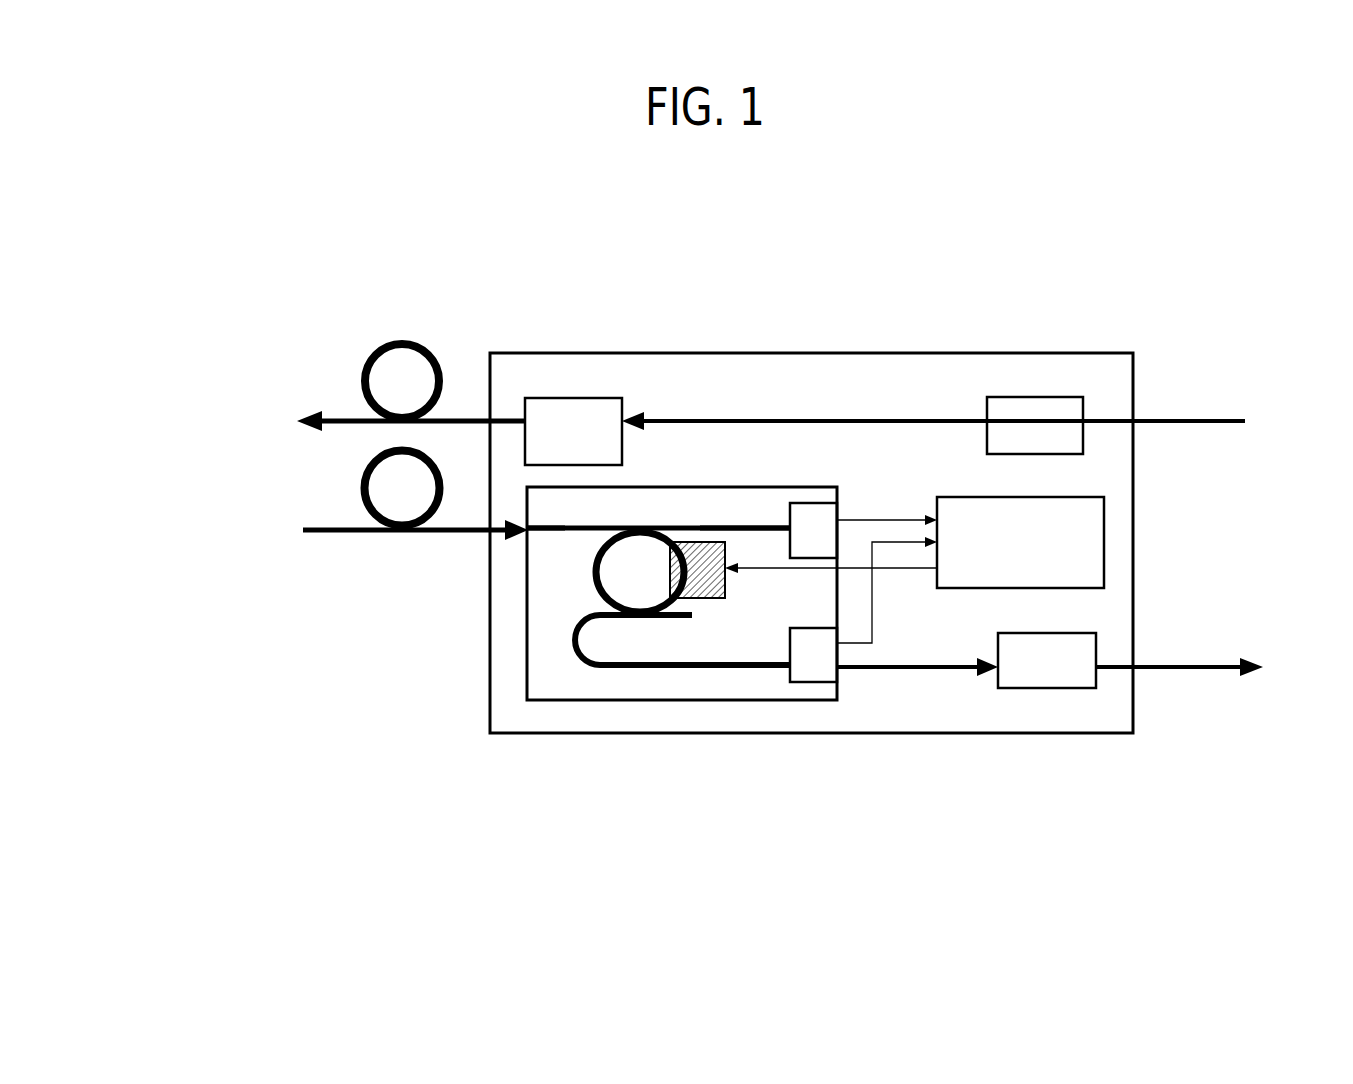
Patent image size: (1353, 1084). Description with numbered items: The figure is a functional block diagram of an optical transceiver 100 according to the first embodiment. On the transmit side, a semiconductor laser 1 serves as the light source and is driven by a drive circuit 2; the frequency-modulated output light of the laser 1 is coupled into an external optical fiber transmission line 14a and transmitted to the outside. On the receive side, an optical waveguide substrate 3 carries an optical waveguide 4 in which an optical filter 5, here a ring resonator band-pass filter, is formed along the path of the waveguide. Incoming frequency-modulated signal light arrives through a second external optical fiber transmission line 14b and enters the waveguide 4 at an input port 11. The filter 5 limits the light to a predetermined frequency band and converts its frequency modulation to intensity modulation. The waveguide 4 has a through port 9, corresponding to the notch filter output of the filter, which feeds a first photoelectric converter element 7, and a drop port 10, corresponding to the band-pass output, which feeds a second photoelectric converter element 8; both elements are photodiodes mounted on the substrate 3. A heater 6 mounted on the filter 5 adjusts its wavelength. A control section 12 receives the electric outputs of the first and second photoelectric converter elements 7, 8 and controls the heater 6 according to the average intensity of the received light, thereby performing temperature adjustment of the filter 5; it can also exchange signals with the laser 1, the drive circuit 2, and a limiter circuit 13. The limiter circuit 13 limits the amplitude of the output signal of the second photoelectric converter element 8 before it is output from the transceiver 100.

The optical transceiver 100 is at (490, 368).
The optical fiber transmission line 14a is at (358, 371).
The optical fiber transmission line 14b is at (357, 475).
The semiconductor laser 1 is at (562, 410).
The drive circuit 2 is at (1043, 415).
The optical waveguide substrate 3 is at (566, 700).
The optical waveguide 4 is at (637, 668).
The optical filter 5 is at (645, 590).
The heater 6 is at (727, 600).
The first photoelectric converter element 7 is at (797, 513).
The second photoelectric converter element 8 is at (810, 680).
The through port 9 is at (740, 523).
The drop port 10 is at (762, 666).
The input port 11 is at (533, 531).
The control section 12 is at (1087, 542).
The limiter circuit 13 is at (1052, 677).